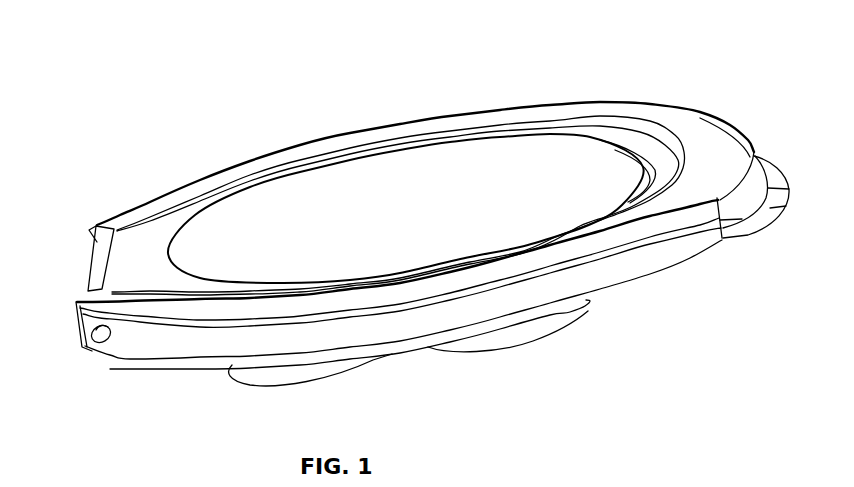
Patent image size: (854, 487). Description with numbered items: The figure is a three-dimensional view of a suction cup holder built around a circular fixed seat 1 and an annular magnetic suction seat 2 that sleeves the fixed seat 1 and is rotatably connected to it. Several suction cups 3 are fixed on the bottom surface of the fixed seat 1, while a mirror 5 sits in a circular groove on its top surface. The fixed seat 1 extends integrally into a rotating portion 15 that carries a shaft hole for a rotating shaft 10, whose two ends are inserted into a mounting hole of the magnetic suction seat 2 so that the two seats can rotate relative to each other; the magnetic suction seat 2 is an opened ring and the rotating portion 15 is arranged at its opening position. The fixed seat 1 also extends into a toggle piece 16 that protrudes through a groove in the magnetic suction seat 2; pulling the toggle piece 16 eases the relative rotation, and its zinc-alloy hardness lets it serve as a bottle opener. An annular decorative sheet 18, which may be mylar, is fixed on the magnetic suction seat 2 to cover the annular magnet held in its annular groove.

The fixed seat 1 is at (615, 140).
The magnetic suction seat 2 is at (645, 250).
The suction cup 3 is at (533, 334).
The mirror 5 is at (400, 195).
The rotating shaft 10 is at (97, 338).
The rotating portion 15 is at (127, 259).
The toggle piece 16 is at (776, 208).
The decorative sheet 18 is at (217, 182).